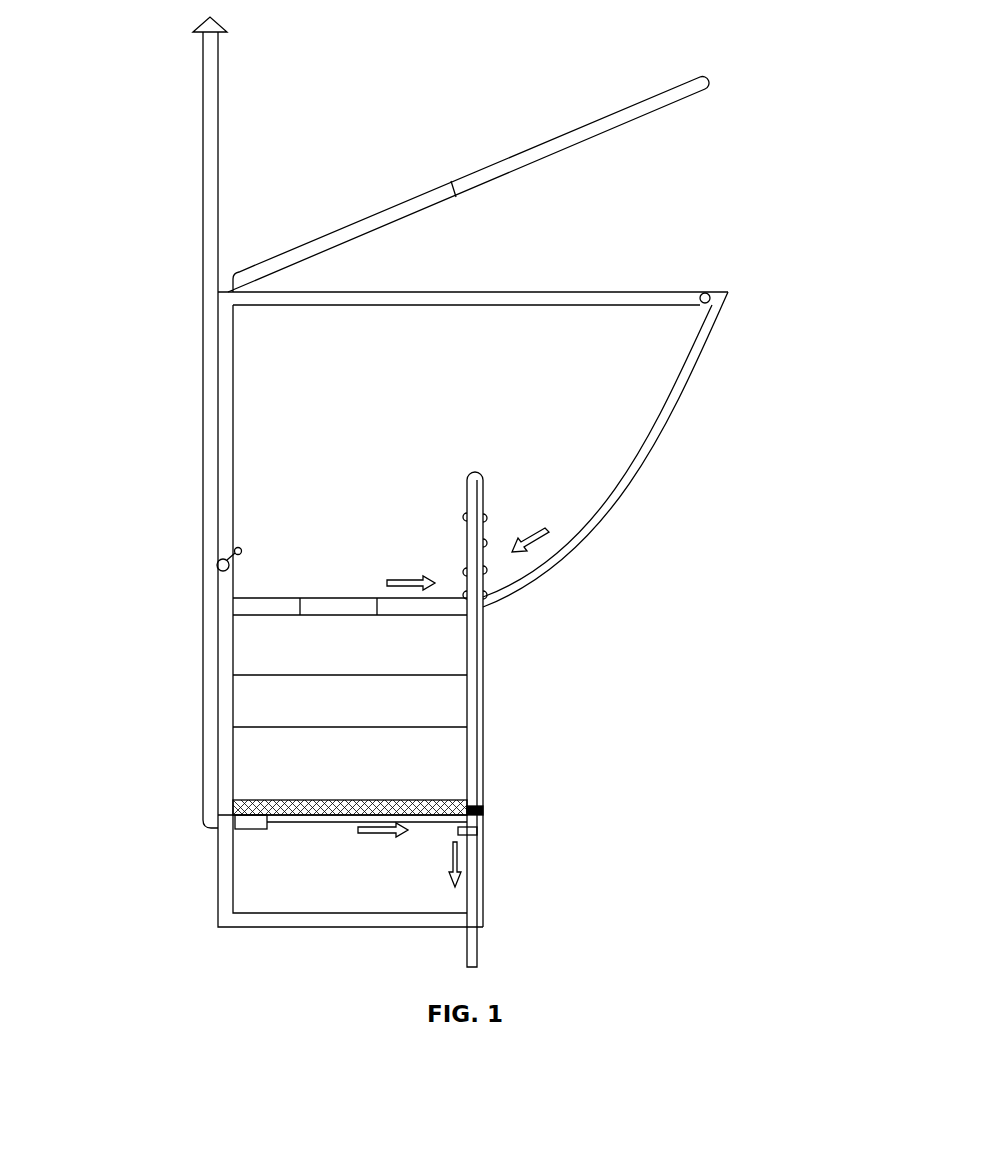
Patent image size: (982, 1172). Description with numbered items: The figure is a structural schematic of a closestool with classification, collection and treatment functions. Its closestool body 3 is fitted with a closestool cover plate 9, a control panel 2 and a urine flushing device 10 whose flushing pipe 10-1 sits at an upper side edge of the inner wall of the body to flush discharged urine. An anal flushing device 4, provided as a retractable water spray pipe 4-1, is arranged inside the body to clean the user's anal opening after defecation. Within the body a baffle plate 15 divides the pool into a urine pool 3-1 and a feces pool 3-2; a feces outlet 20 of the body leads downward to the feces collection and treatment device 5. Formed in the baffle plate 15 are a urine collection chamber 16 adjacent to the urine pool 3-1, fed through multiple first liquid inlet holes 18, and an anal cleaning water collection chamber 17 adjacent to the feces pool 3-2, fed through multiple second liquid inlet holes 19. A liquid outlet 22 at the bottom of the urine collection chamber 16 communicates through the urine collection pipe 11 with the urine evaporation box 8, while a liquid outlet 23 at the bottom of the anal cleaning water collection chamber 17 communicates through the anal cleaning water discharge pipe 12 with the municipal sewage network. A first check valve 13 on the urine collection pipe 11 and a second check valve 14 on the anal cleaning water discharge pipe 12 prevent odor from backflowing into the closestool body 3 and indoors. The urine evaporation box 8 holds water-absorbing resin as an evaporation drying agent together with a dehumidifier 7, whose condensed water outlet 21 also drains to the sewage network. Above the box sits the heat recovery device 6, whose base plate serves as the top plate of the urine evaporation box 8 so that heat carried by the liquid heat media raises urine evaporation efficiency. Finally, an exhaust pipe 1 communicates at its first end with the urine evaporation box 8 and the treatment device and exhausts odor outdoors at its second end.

The exhaust pipe 1 is at (210, 92).
The control panel 2 is at (237, 273).
The closestool body 3 is at (280, 412).
The urine pool 3-1 is at (570, 533).
The feces pool 3-2 is at (272, 490).
The anal flushing device 4 is at (218, 569).
The retractable water spray pipe 4-1 is at (241, 548).
The feces collection and treatment device 5 is at (252, 688).
The heat recovery device 6 is at (230, 817).
The dehumidifier 7 is at (253, 830).
The urine evaporation box 8 is at (280, 902).
The closestool cover plate 9 is at (673, 93).
The urine flushing device 10 is at (713, 300).
The flushing pipe 10-1 is at (815, 268).
The urine collection pipe 11 is at (482, 632).
The anal cleaning water discharge pipe 12 is at (472, 690).
The first check valve 13 is at (483, 813).
The second check valve 14 is at (475, 818).
The baffle plate 15 is at (472, 473).
The urine collection chamber 16 is at (483, 490).
The anal cleaning water collection chamber 17 is at (473, 517).
The first liquid inlet holes 18 is at (487, 518).
The second liquid inlet holes 19 is at (473, 593).
The feces outlet 20 is at (330, 607).
The condensed water outlet 21 is at (467, 818).
The liquid outlet 22 is at (483, 615).
The liquid outlet 23 is at (483, 620).